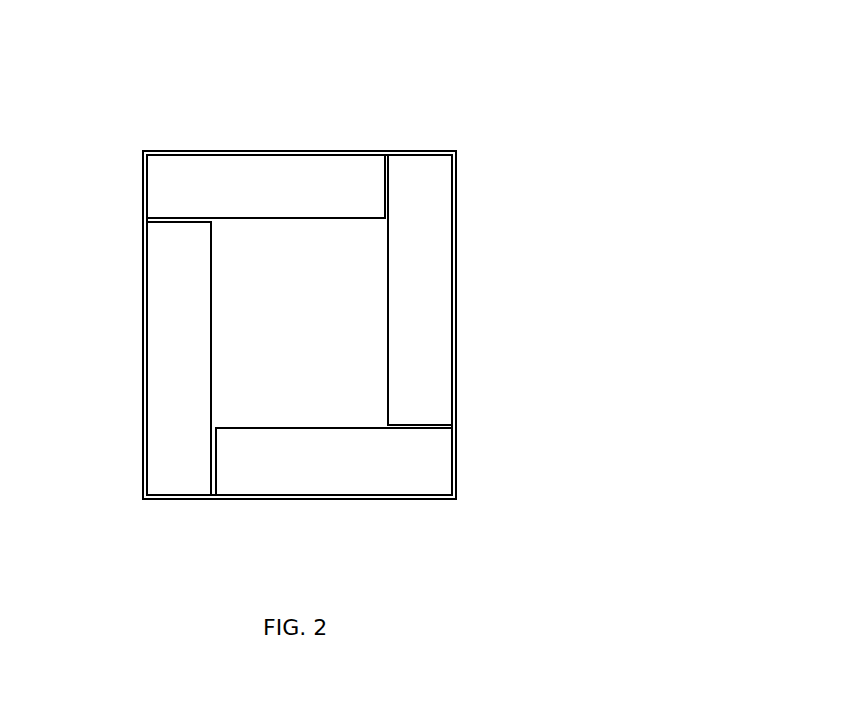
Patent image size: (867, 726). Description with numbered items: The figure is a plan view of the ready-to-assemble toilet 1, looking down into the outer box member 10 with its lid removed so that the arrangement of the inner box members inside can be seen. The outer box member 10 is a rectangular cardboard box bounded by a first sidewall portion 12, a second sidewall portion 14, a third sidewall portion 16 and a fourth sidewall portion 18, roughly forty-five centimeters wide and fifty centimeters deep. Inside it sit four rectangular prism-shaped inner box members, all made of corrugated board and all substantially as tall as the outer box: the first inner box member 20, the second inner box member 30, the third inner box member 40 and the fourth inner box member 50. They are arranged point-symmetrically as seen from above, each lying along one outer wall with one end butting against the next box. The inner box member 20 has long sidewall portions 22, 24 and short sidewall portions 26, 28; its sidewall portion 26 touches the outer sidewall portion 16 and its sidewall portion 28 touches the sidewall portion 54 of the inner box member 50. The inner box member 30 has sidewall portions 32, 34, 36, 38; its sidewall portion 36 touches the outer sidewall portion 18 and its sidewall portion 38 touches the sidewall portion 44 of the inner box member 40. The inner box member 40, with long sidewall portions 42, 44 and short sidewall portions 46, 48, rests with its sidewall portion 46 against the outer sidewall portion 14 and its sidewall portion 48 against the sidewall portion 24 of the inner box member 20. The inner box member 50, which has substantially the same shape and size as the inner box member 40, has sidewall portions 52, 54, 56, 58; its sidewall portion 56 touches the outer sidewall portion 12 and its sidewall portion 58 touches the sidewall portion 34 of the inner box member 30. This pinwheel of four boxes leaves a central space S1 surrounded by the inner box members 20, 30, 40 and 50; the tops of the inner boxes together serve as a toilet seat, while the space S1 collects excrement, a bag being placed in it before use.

The ready-to-assemble toilet 1 is at (399, 60).
The outer box member 10 is at (462, 152).
The sidewall portion (first sidewall portion of outer box member) 12 is at (143, 323).
The sidewall portion (second sidewall portion of outer box member) 14 is at (457, 325).
The sidewall portion (third sidewall portion of outer box member) 16 is at (297, 500).
The sidewall portion (fourth sidewall portion of outer box member) 18 is at (302, 150).
The inner box member (first inner box member) 20 is at (178, 403).
The sidewall portion (first sidewall portion of inner box member 20) 22 is at (143, 358).
The sidewall portion (second sidewall portion of inner box member 20) 24 is at (213, 313).
The sidewall portion (third sidewall portion of inner box member 20) 26 is at (180, 497).
The sidewall portion (fourth sidewall portion of inner box member 20) 28 is at (188, 218).
The inner box member (second inner box member) 30 is at (425, 238).
The sidewall portion (first sidewall portion of inner box member 30) 32 is at (457, 290).
The sidewall portion (second sidewall portion of inner box member 30) 34 is at (385, 340).
The sidewall portion (third sidewall portion of inner box member 30) 36 is at (407, 153).
The sidewall portion (fourth sidewall portion of inner box member 30) 38 is at (415, 428).
The inner box member (third inner box member) 40 is at (380, 460).
The sidewall portion (first sidewall portion of inner box member 40) 42 is at (335, 500).
The sidewall portion (second sidewall portion of inner box member 40) 44 is at (308, 425).
The sidewall portion (third sidewall portion of inner box member 40) 46 is at (457, 462).
The sidewall portion (fourth sidewall portion of inner box member 40) 48 is at (208, 462).
The inner box member (fourth inner box member) 50 is at (228, 188).
The sidewall portion (first sidewall portion of inner box member 50) 52 is at (265, 157).
The sidewall portion (second sidewall portion of inner box member 50) 54 is at (302, 220).
The sidewall portion (third sidewall portion of inner box member 50) 56 is at (145, 183).
The sidewall portion (fourth sidewall portion of inner box member 50) 58 is at (388, 192).
The space S1 is at (299, 323).